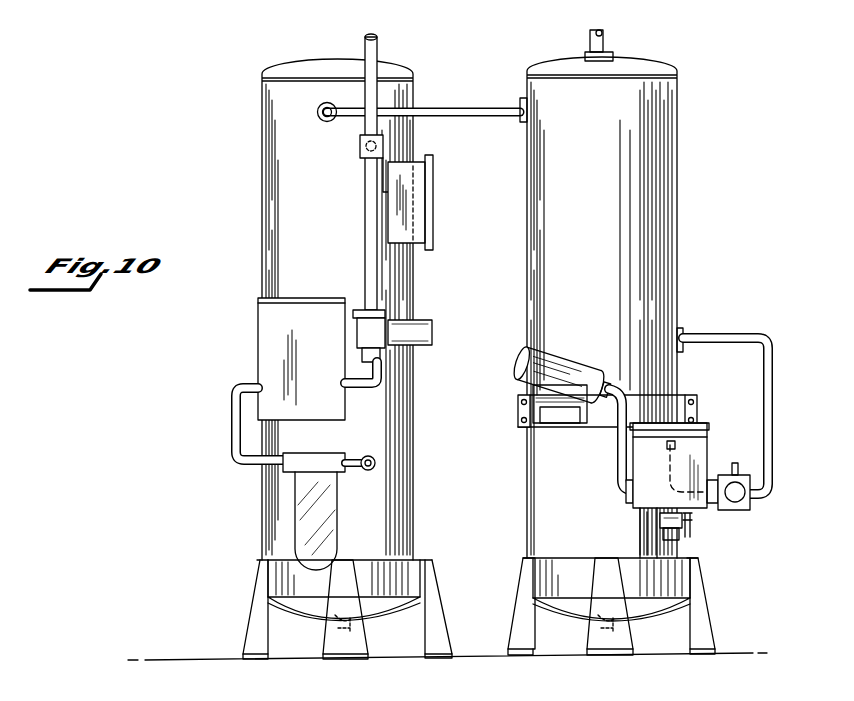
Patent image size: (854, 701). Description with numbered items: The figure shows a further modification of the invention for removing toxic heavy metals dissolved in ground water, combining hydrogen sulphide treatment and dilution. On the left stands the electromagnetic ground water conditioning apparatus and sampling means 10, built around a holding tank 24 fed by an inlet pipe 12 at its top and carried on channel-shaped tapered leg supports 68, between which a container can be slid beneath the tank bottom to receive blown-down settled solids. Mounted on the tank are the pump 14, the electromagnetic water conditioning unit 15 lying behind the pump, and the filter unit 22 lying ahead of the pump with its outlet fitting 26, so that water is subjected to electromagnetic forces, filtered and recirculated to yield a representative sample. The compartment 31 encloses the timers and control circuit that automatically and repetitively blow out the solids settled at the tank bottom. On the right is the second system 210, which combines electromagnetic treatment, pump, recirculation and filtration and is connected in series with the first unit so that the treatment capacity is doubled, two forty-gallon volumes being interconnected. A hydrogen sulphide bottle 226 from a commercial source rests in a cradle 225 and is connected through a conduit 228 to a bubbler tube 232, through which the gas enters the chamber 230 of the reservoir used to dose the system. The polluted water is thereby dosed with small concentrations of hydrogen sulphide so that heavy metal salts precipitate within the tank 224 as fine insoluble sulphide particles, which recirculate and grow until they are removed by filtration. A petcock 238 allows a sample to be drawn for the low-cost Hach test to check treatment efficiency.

The electromagnetic ground water conditioning apparatus and sampling means 10 is at (254, 121).
The inlet pipe 12 is at (363, 50).
The pump 14 is at (362, 336).
The electromagnetic water conditioning unit 15 is at (287, 330).
The filter unit 22 is at (325, 517).
The holding tank 24 is at (316, 173).
The outlet fitting 26 is at (372, 471).
The compartment 31 is at (402, 185).
The channel-shaped tapered leg supports 68 is at (250, 598).
The system 210 is at (686, 170).
The tank 224 is at (538, 172).
The cradle 225 is at (540, 398).
The bottle 226 is at (557, 362).
The conduit 228 is at (620, 468).
The chamber 230 is at (637, 533).
The bubbler tube 232 is at (703, 439).
The petcock 238 is at (682, 522).